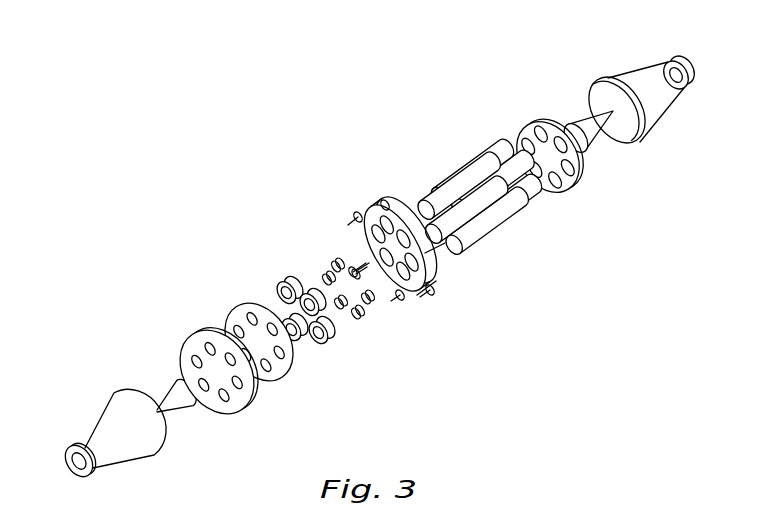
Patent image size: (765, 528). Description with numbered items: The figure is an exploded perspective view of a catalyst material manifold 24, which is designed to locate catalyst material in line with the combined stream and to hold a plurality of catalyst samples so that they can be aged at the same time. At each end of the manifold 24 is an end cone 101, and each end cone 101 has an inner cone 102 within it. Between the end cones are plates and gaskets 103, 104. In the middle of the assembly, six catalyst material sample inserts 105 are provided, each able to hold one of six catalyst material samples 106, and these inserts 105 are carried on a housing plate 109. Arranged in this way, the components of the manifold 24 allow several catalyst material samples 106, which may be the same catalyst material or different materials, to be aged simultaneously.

The catalyst material manifold 24 is at (600, 357).
The end cone 101 is at (634, 127).
The inner cone 102 is at (572, 124).
The plate 103 is at (238, 390).
The gasket 104 is at (203, 300).
The catalyst material sample insert 105 is at (312, 345).
The catalyst material sample 106 is at (318, 236).
The housing plate 109 is at (437, 288).